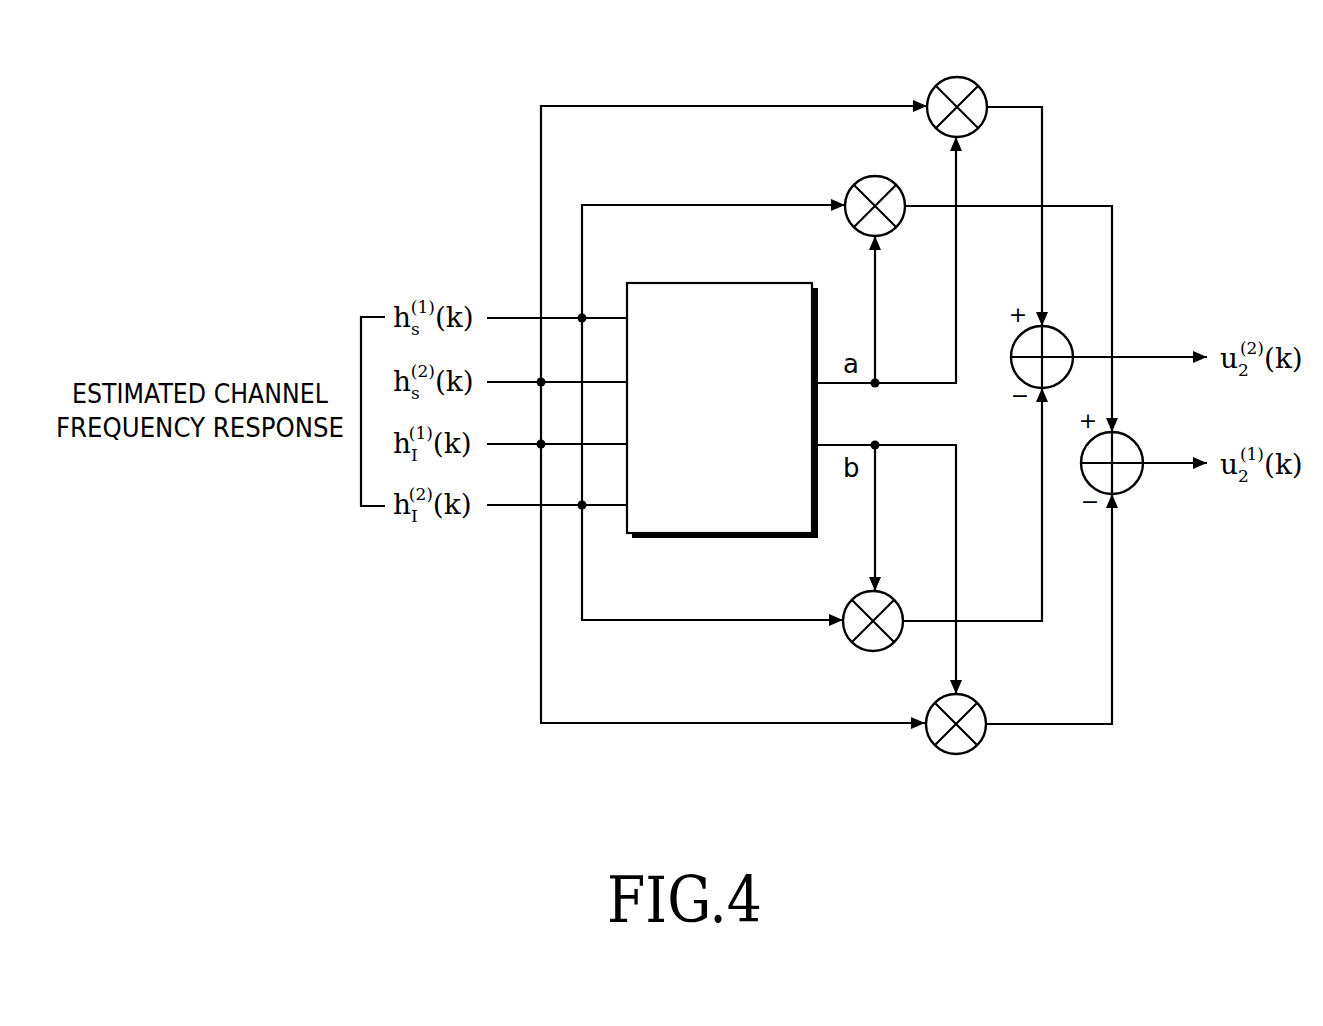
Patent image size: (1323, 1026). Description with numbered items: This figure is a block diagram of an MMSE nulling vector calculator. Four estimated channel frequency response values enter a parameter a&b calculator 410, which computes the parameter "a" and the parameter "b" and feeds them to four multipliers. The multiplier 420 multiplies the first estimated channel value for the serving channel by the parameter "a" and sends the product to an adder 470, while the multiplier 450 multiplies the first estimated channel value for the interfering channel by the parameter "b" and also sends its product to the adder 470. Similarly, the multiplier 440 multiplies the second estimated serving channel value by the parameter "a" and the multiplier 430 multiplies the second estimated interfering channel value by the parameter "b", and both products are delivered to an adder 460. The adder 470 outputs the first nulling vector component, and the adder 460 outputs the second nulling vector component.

The parameter a&b calculator 410 is at (721, 283).
The multiplier 420 is at (872, 175).
The multiplier 430 is at (873, 652).
The multiplier 440 is at (954, 76).
The multiplier 450 is at (956, 755).
The adder 460 is at (1055, 342).
The adder 470 is at (1125, 448).